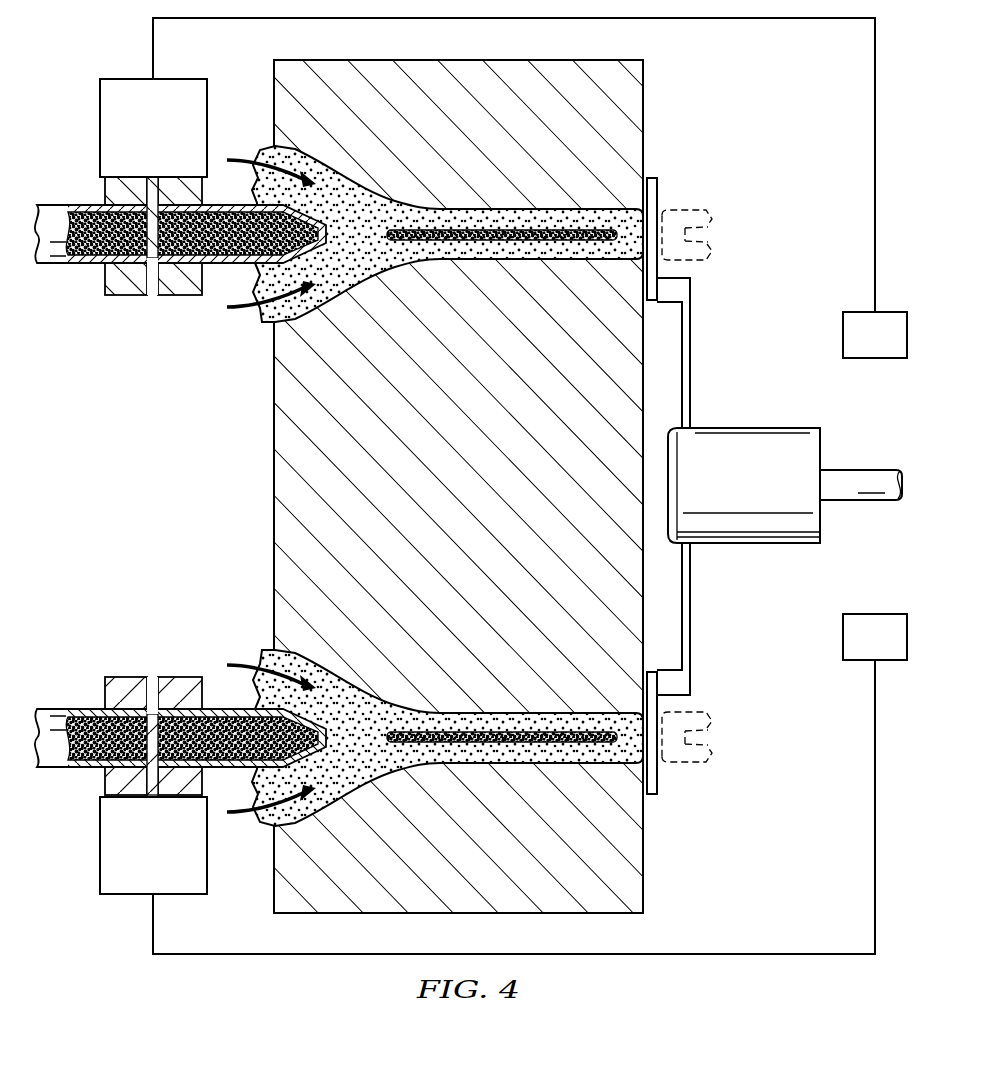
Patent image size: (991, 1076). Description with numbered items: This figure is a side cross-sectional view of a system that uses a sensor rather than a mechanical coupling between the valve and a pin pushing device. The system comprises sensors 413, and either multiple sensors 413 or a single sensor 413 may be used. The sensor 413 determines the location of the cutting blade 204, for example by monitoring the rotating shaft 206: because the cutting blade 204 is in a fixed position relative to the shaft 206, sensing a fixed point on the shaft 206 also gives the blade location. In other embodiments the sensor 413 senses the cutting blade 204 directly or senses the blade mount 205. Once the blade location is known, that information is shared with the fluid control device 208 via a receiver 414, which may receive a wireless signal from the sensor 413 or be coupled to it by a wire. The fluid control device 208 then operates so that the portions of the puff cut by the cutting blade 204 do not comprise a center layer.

The cutting blade 204 is at (658, 195).
The blade mount 205 is at (773, 497).
The shaft 206 is at (873, 505).
The fluid control device 208 is at (150, 314).
The sensor 413 is at (843, 335).
The receiver 414 is at (173, 138).